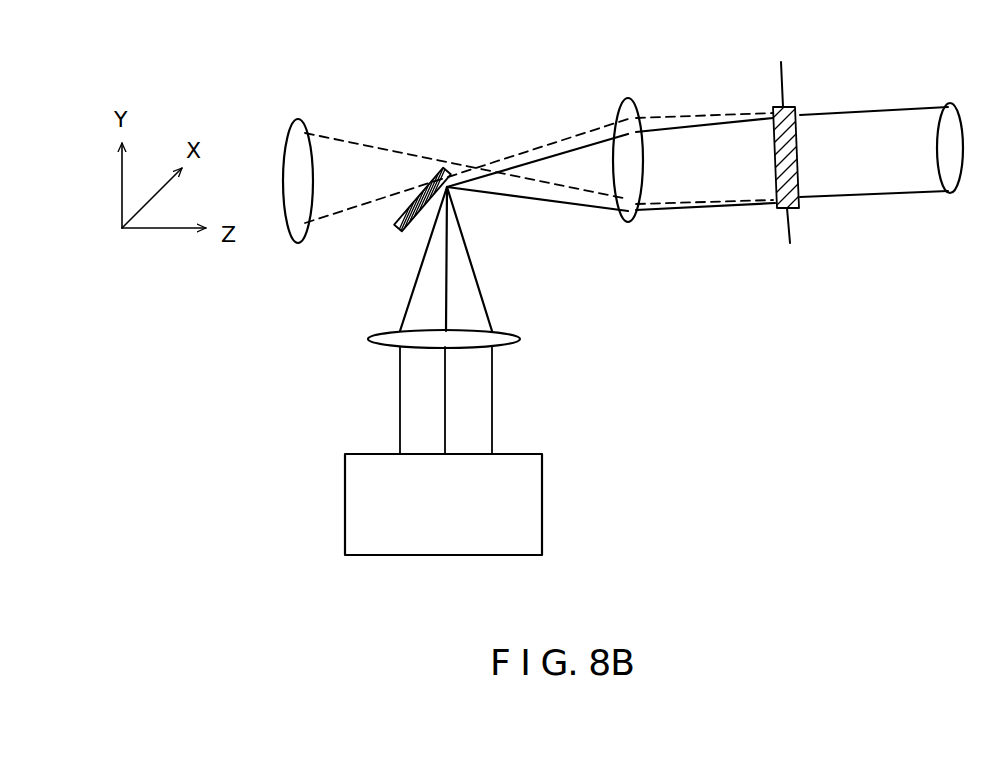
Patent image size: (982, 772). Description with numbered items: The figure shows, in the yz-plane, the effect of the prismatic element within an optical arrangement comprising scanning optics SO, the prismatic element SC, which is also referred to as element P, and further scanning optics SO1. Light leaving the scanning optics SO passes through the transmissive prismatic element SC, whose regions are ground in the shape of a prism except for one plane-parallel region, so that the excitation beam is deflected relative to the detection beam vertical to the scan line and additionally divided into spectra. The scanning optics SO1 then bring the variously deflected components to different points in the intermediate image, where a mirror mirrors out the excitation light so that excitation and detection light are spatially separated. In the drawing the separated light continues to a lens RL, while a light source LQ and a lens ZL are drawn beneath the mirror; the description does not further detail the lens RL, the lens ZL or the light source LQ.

The reference light source / lens RL is at (279, 163).
The scanning optics SO1 is at (627, 142).
The prismatic element SC is at (783, 124).
The element P is at (801, 230).
The scanning optics SO is at (881, 128).
The lens ZL is at (467, 342).
The light source LQ is at (464, 504).